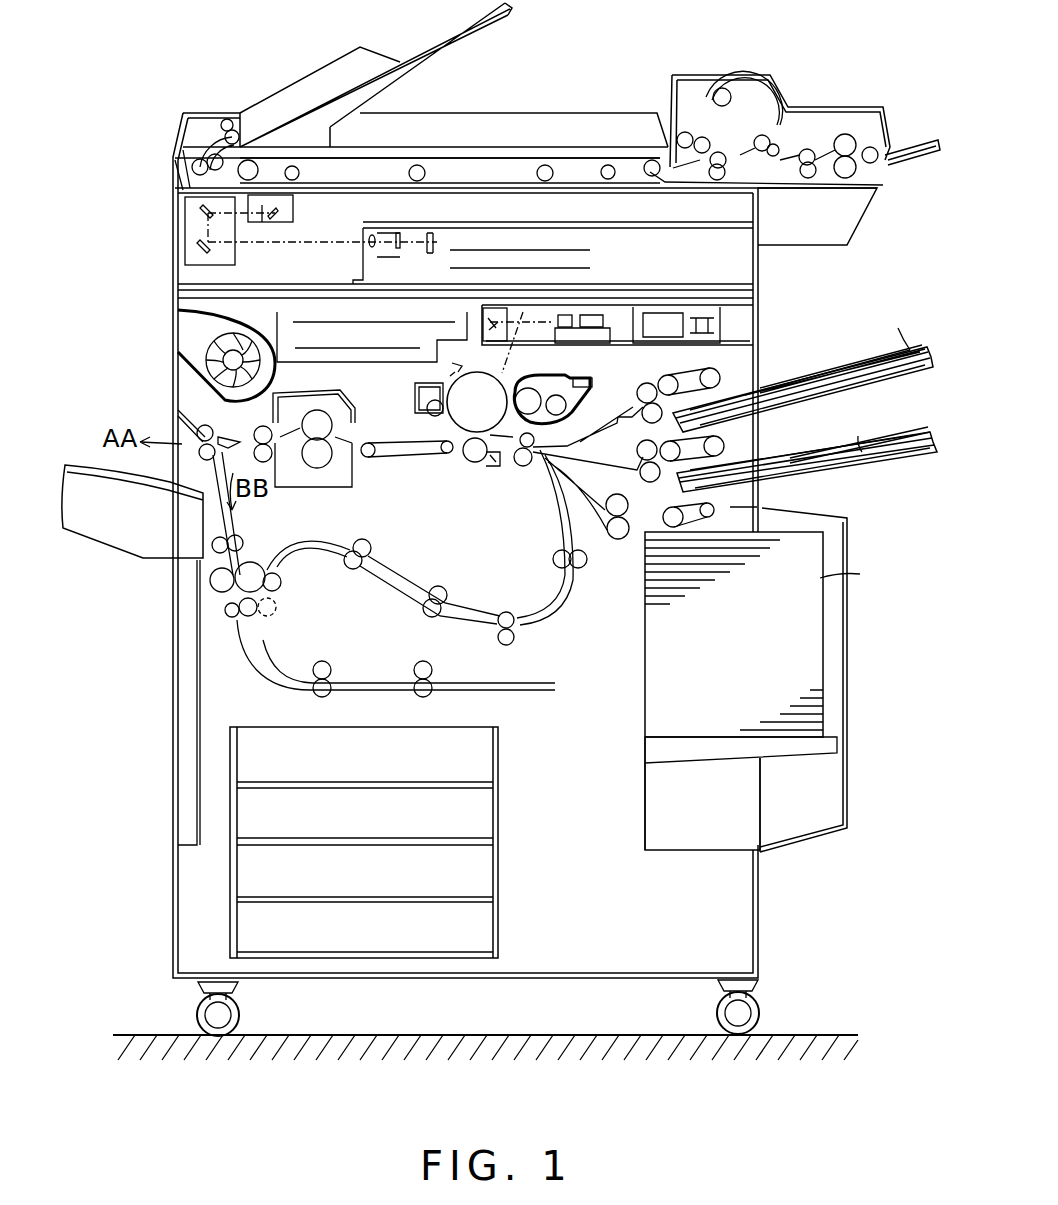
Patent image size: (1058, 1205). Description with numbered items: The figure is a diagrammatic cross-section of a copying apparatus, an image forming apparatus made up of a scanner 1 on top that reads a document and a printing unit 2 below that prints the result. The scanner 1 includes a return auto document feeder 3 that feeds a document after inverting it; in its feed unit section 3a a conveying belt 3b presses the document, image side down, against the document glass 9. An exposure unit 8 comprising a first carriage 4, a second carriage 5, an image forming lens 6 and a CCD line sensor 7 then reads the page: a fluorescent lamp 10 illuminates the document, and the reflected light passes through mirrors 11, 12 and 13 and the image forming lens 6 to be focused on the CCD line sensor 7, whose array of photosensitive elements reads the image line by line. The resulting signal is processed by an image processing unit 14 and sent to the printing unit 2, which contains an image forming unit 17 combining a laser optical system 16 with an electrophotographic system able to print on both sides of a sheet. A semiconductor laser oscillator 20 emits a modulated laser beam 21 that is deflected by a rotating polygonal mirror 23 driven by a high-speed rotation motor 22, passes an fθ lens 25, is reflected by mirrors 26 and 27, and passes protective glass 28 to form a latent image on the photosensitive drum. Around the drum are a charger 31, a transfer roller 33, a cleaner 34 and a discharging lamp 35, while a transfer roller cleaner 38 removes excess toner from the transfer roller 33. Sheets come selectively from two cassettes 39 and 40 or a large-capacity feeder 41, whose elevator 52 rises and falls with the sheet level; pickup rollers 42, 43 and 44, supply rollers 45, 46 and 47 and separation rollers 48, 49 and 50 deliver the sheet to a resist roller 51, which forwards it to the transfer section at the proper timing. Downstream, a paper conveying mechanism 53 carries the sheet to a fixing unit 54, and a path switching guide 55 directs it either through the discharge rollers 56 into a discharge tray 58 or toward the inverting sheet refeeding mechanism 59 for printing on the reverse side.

The scanner 1 is at (204, 206).
The printing unit 2 is at (178, 318).
The return auto document feeder 3 is at (745, 63).
The feed unit section 3a is at (478, 70).
The conveying belt 3b is at (612, 160).
The first carriage 4 is at (293, 204).
The second carriage 5 is at (186, 226).
The image forming lens 6 is at (372, 234).
The CCD line sensor 7 is at (410, 236).
The exposure unit 8 is at (276, 244).
The document glass 9 is at (530, 160).
The fluorescent lamp 10 is at (278, 212).
The mirror 11 is at (264, 222).
The mirror 12 is at (183, 192).
The mirror 13 is at (200, 246).
The image processing unit 14 is at (470, 268).
The laser optical system 16 is at (720, 320).
The image forming unit 17 is at (176, 624).
The semiconductor laser oscillator 20 is at (753, 305).
The laser beam 21 is at (590, 384).
The high-speed rotation motor 22 is at (725, 330).
The rotating polygonal mirror 23 is at (660, 320).
The fθ lens 25 is at (598, 328).
The mirror 26 is at (498, 305).
The mirror 27 is at (520, 312).
The protective glass 28 is at (495, 380).
The charger 31 is at (498, 372).
The transfer roller 33 is at (472, 462).
The cleaner 34 is at (427, 410).
The discharging lamp 35 is at (428, 384).
The transfer roller cleaner 38 is at (492, 468).
The cassette 39 is at (928, 375).
The cassette 40 is at (910, 470).
The large-capacity feeder 41 is at (850, 640).
The pickup roller 42 is at (718, 378).
The pickup roller 43 is at (722, 446).
The pickup roller 44 is at (730, 520).
The supply roller 45 is at (644, 384).
The supply roller 46 is at (637, 450).
The supply roller 47 is at (612, 503).
The separation roller 48 is at (642, 406).
The separation roller 49 is at (652, 483).
The separation roller 50 is at (618, 540).
The resist roller 51 is at (524, 466).
The elevator 52 is at (815, 752).
The paper conveying mechanism 53 is at (400, 455).
The fixing unit 54 is at (330, 386).
The path switching guide 55 is at (232, 440).
The discharge rollers 56 is at (182, 412).
The discharge tray 58 is at (90, 533).
The inverting sheet refeeding mechanism 59 is at (197, 684).